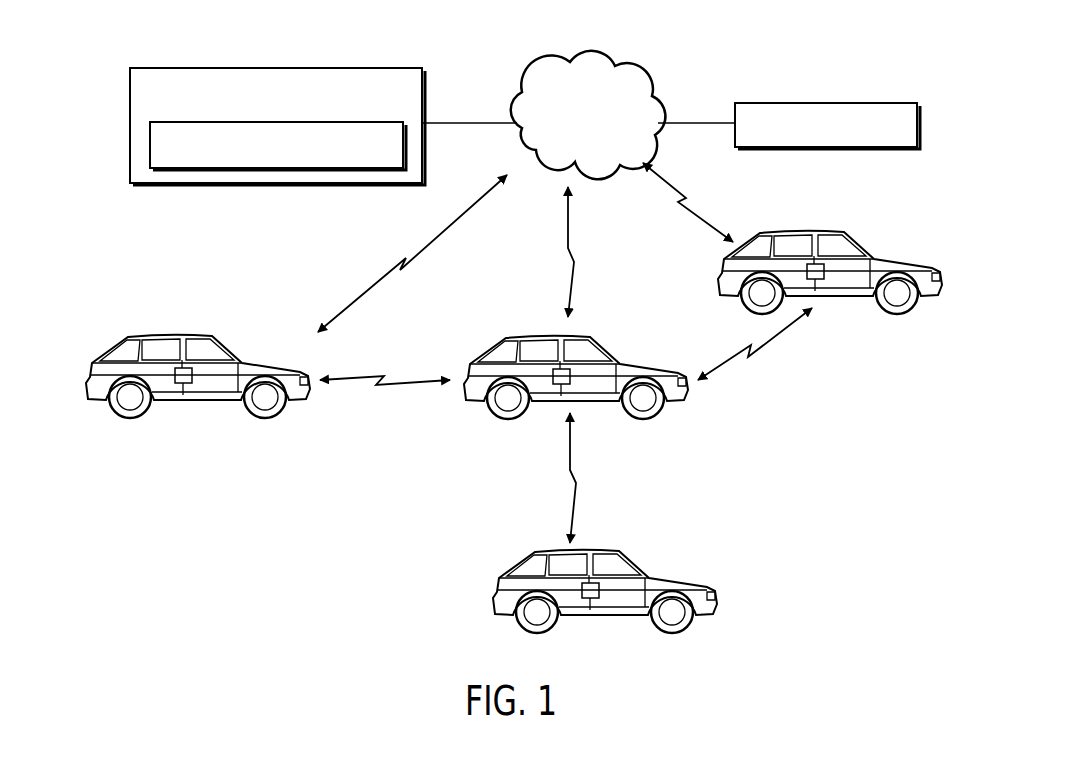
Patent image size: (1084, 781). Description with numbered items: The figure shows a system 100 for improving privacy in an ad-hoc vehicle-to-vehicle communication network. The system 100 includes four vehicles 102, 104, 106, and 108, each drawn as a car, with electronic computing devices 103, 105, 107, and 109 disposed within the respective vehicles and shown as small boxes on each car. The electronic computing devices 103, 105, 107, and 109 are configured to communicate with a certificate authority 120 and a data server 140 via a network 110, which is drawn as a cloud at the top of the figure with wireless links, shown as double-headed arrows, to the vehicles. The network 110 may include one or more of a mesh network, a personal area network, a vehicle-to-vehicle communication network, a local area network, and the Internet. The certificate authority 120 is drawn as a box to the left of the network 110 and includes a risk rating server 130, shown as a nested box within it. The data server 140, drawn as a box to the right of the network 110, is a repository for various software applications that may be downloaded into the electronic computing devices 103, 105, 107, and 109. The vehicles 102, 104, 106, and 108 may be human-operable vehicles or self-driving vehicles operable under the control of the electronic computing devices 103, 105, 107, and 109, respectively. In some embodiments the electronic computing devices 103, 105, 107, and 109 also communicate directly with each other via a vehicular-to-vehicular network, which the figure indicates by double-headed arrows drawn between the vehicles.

The system 100 is at (800, 31).
The vehicle 102 is at (610, 350).
The electronic computing device 103 is at (540, 411).
The vehicle 104 is at (232, 348).
The electronic computing device 105 is at (197, 410).
The vehicle 106 is at (640, 562).
The electronic computing device 107 is at (605, 625).
The vehicle 108 is at (865, 245).
The electronic computing device 109 is at (830, 306).
The network 110 is at (637, 68).
The certificate authority 120 is at (130, 125).
The risk rating server 130 is at (273, 168).
The data server 140 is at (827, 147).